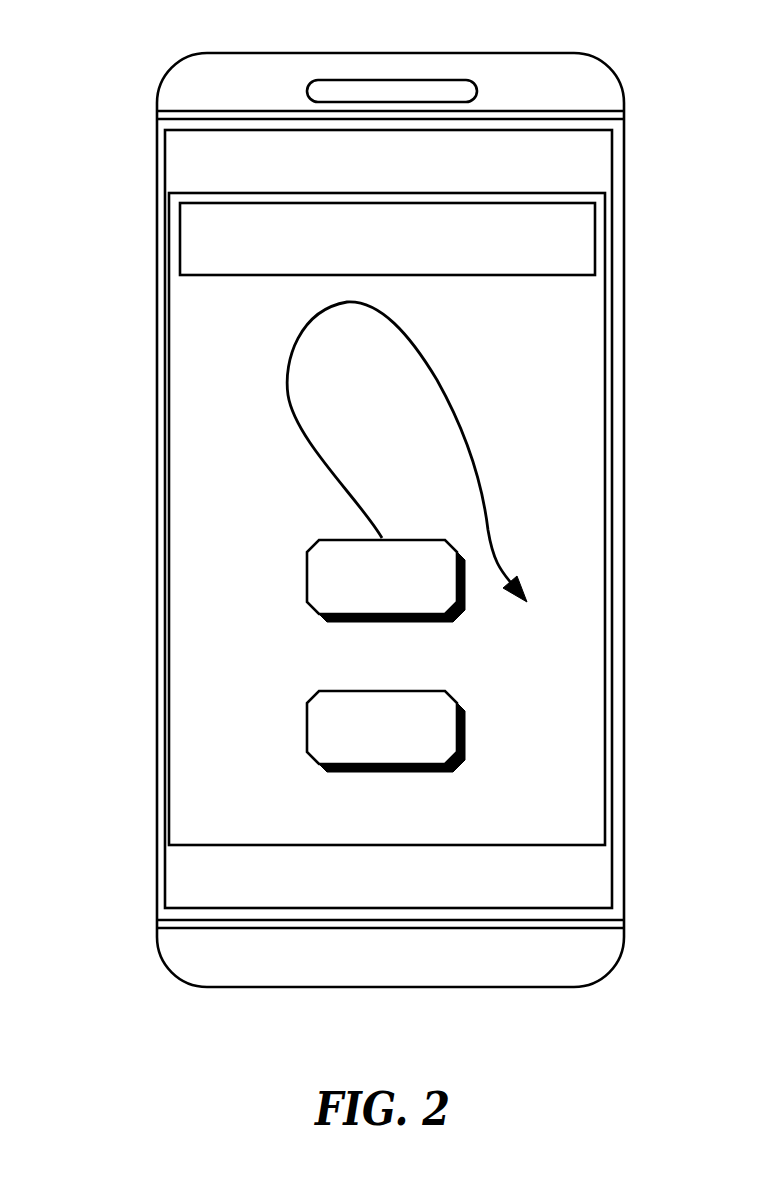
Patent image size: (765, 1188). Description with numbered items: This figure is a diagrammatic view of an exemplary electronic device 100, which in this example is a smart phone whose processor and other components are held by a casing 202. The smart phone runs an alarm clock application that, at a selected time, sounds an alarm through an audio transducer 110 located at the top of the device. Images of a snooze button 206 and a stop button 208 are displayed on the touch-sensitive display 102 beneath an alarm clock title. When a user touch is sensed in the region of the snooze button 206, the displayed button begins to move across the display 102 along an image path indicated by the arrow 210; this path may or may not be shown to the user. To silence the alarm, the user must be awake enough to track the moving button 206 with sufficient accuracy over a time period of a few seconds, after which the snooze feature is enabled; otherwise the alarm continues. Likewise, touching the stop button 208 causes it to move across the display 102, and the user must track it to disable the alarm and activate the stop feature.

The electronic device 100 is at (405, 1041).
The audio transducer 110 is at (345, 91).
The casing 202 is at (157, 373).
The touch-sensitive display 102 is at (202, 503).
The snooze button 206 is at (307, 579).
The stop button 208 is at (307, 729).
The arrow 210 is at (434, 378).